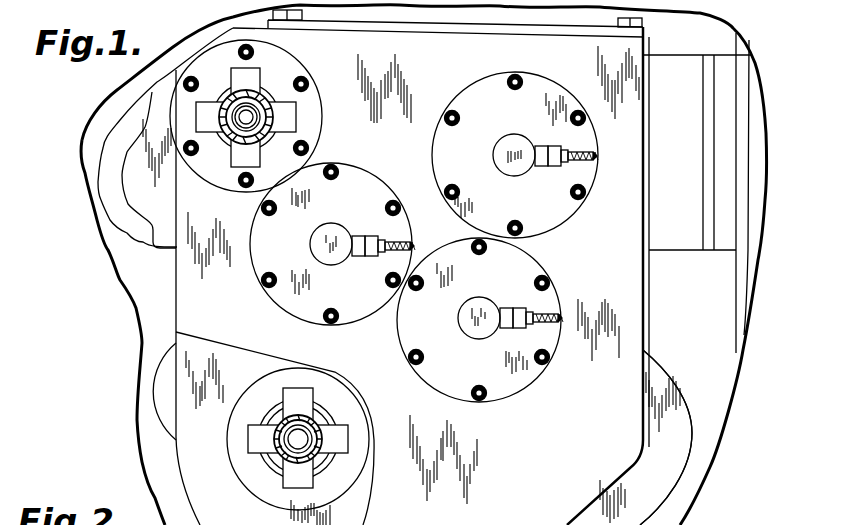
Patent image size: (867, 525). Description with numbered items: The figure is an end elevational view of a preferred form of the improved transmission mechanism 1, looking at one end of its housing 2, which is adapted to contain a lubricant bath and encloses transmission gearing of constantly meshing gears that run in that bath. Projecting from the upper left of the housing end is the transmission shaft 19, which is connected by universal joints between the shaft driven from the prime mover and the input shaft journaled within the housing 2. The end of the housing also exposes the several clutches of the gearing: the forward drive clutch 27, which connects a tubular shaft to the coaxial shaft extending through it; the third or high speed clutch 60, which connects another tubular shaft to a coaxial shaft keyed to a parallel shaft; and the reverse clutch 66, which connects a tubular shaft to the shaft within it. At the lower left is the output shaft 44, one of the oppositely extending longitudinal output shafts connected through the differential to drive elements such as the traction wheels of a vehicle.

The transmission mechanism 1 is at (172, 275).
The housing 2 is at (615, 443).
The transmission shaft 19 is at (262, 97).
The forward drive clutch 27 is at (373, 186).
The output shaft 44 is at (278, 462).
The third or high speed clutch 60 is at (413, 332).
The reverse clutch 66 is at (476, 93).